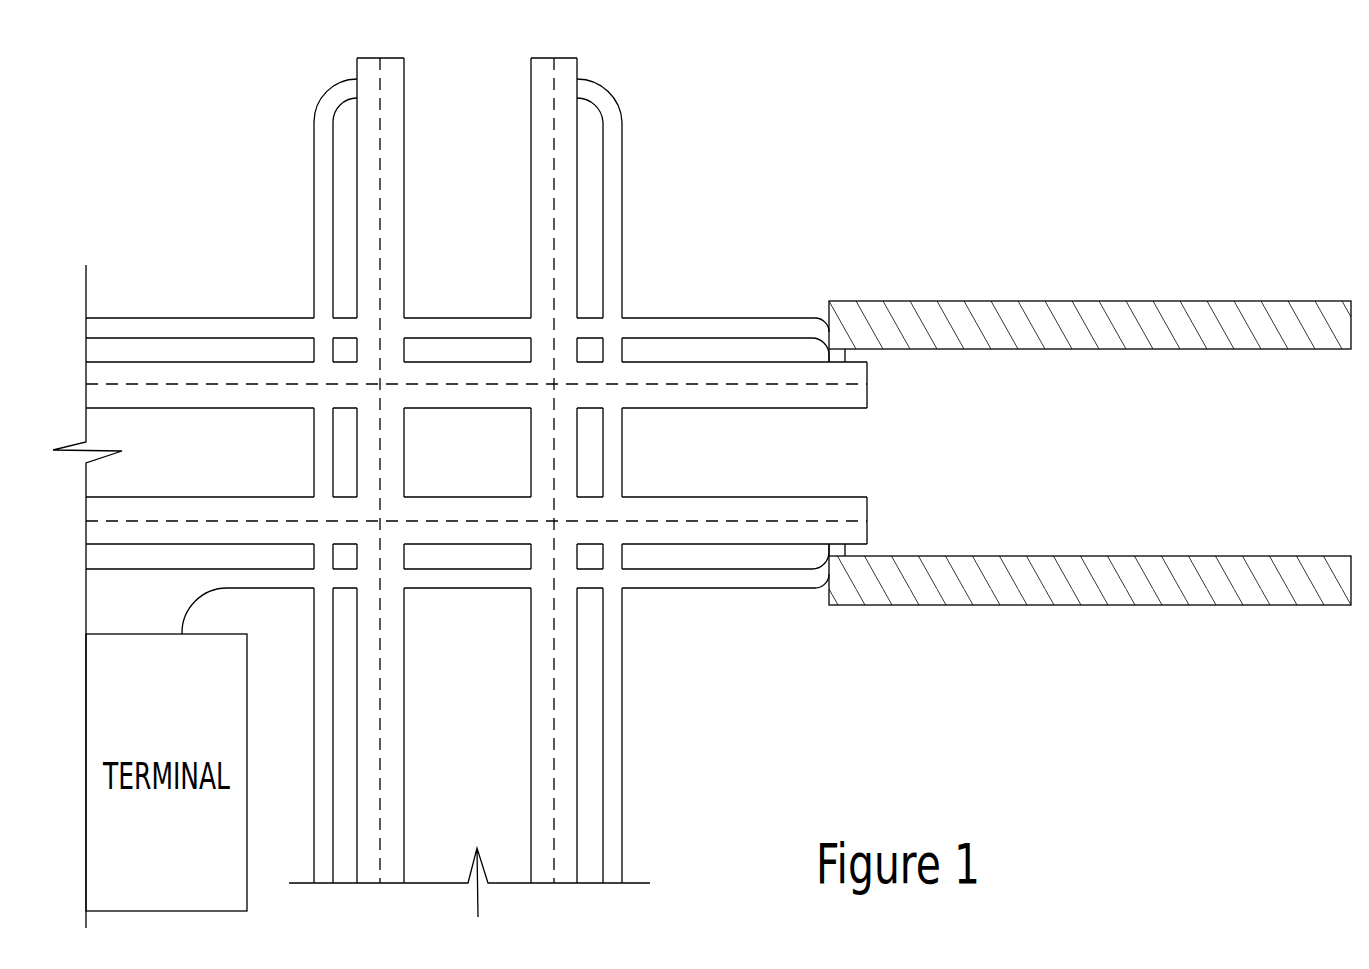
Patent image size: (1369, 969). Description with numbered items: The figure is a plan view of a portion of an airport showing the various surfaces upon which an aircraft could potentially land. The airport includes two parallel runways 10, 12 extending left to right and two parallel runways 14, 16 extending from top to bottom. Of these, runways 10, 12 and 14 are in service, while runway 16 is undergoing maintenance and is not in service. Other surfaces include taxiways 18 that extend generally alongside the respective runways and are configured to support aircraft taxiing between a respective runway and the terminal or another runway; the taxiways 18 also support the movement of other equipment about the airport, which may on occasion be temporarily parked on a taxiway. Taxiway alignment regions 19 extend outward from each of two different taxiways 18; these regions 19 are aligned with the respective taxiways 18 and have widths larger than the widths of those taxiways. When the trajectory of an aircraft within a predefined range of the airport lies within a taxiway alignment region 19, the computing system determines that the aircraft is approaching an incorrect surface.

The runway 10 is at (853, 374).
The runway 12 is at (853, 512).
The runway 14 is at (565, 68).
The runway 16 is at (370, 68).
The taxiway 18 is at (313, 173).
The taxiway alignment region 19 is at (1100, 301).